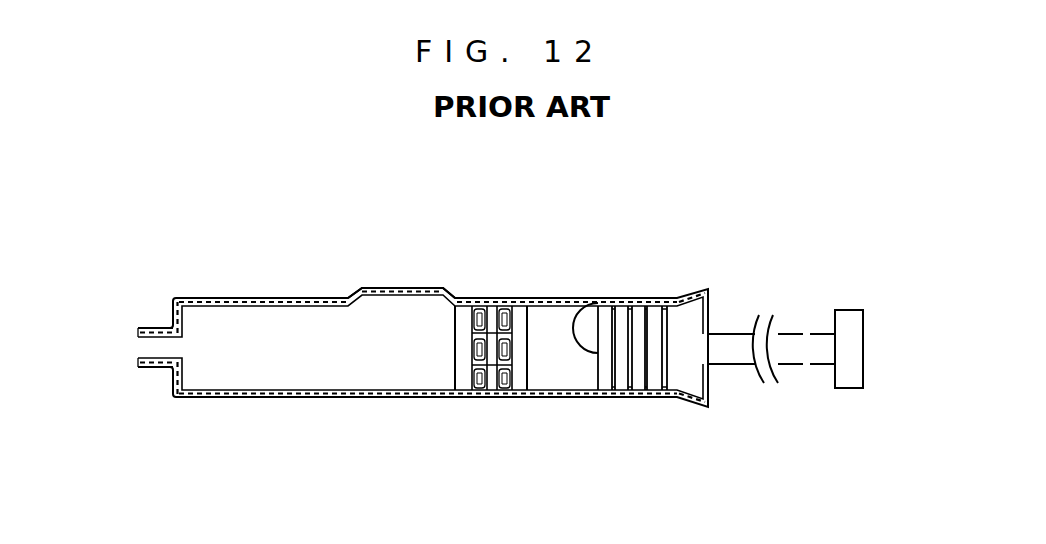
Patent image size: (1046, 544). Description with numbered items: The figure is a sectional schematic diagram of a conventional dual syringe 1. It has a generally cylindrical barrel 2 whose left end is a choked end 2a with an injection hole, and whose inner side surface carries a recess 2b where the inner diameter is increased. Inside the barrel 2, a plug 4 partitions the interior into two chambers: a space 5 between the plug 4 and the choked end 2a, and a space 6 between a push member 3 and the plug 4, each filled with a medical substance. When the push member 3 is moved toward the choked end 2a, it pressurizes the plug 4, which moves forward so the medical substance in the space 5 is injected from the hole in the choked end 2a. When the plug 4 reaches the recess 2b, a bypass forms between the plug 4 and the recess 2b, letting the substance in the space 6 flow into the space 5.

The dual syringe 1 is at (466, 308).
The barrel 2 is at (545, 300).
The choked end 2a is at (170, 315).
The recess 2b is at (400, 289).
The push member 3 is at (580, 305).
The plug 4 is at (455, 342).
The space 5 is at (291, 364).
The space 6 is at (553, 365).